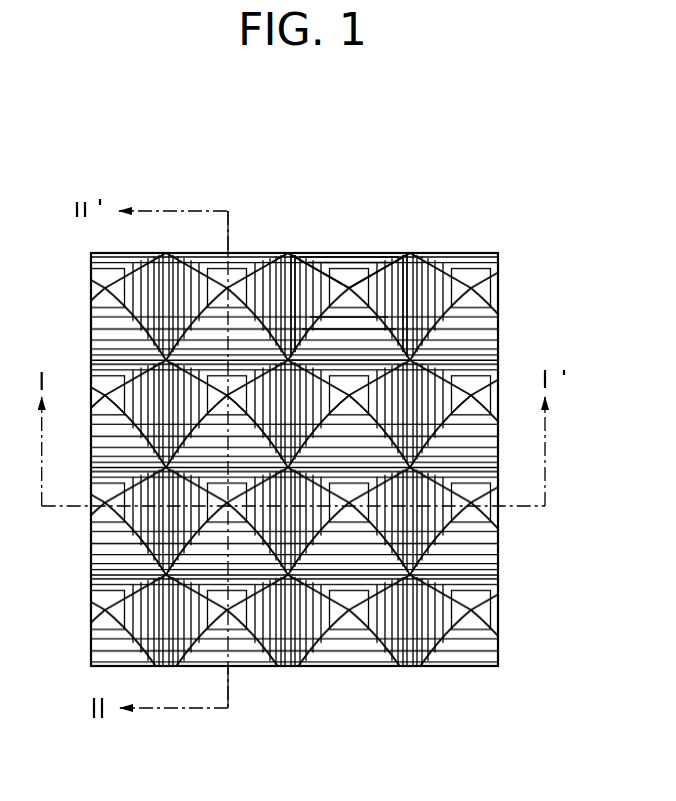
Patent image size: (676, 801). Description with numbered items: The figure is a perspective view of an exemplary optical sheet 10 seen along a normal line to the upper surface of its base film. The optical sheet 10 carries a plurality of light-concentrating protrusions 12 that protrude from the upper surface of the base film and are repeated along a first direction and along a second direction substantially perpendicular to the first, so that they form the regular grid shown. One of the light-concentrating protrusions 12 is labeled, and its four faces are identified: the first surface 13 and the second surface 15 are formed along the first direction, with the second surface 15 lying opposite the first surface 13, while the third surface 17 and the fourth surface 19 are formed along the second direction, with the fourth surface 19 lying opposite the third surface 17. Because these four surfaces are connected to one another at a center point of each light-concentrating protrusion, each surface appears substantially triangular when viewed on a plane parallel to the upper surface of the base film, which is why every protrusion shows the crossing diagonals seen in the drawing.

The optical sheet 10 is at (323, 138).
The light-concentrating protrusions 12 is at (417, 188).
The first surface 13 is at (303, 280).
The fourth surface 19 is at (335, 263).
The third surface 17 is at (367, 320).
The second surface 15 is at (403, 278).